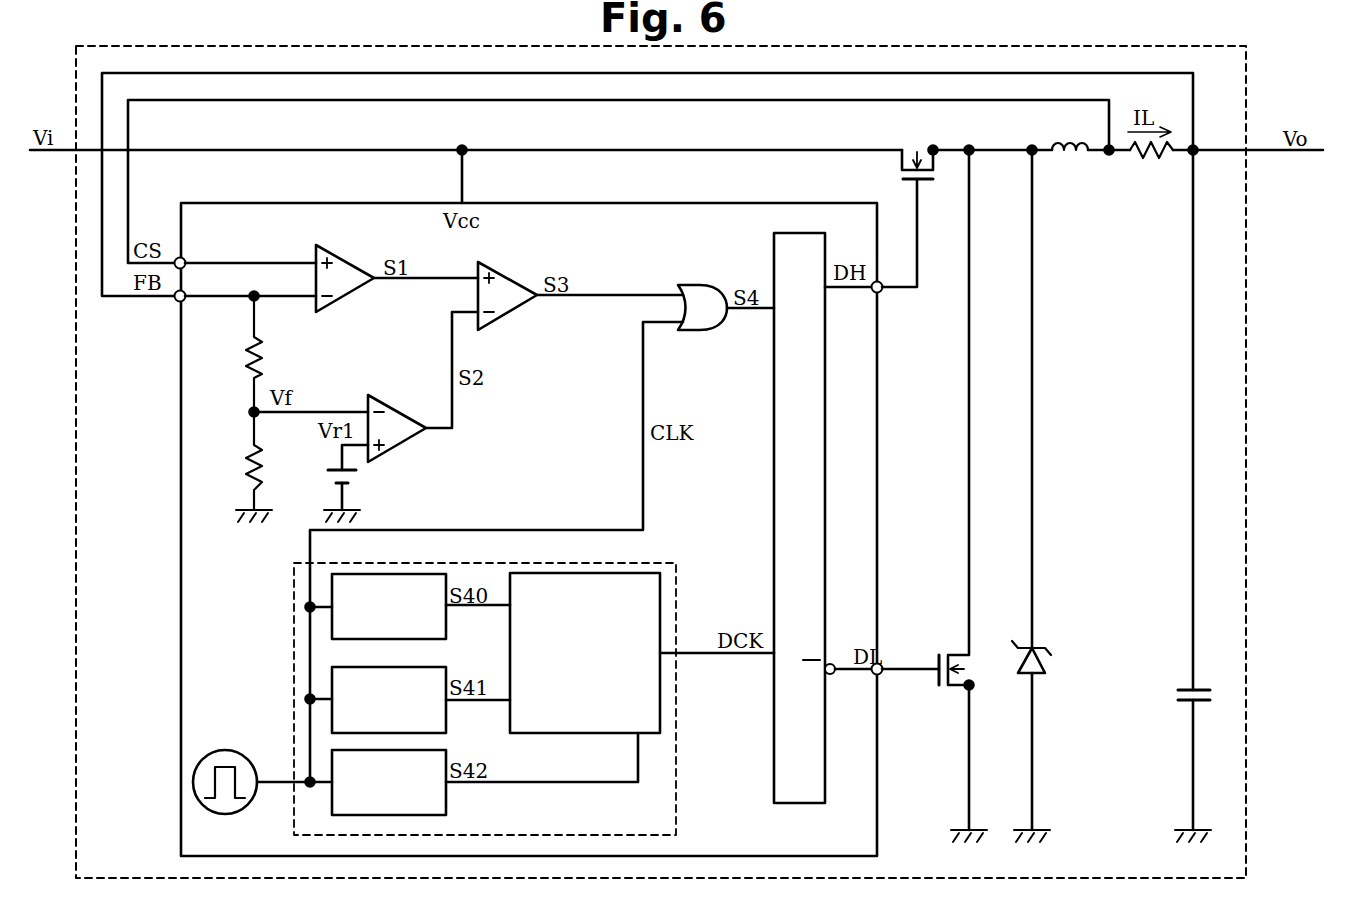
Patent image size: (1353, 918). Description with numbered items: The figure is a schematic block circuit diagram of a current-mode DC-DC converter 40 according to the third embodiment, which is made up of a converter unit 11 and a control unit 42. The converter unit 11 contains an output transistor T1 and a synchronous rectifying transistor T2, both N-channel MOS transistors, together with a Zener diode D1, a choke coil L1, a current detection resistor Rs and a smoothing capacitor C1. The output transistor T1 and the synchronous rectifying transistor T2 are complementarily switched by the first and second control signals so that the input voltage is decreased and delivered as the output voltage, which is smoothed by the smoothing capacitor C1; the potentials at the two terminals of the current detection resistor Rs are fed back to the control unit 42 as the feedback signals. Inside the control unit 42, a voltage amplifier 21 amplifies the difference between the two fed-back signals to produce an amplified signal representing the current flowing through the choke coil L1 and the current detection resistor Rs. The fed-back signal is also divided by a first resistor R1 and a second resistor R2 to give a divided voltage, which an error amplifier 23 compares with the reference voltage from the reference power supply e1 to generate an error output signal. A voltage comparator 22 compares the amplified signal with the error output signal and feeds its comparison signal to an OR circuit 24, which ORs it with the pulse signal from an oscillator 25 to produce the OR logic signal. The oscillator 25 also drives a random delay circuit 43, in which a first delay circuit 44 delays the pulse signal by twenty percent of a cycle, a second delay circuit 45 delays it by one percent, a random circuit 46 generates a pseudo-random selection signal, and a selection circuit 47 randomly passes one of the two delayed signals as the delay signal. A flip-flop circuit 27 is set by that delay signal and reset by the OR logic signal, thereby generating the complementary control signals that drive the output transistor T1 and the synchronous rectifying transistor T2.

The converter unit 11 is at (881, 139).
The voltage amplifier 21 is at (350, 240).
The voltage comparator 22 is at (500, 268).
The error amplifier 23 is at (405, 388).
The OR circuit 24 is at (686, 285).
The oscillator 25 is at (224, 750).
The flip-flop circuit 27 is at (774, 465).
The DC-DC converter 40 is at (1246, 60).
The control unit 42 is at (805, 203).
The random delay circuit 43 is at (653, 563).
The first delay circuit 44 is at (380, 574).
The second delay circuit 45 is at (420, 667).
The random circuit 46 is at (430, 750).
The selection circuit 47 is at (660, 590).
The output transistor T1 is at (906, 152).
The synchronous rectifying transistor T2 is at (960, 655).
The Zener diode D1 is at (1040, 648).
The smoothing capacitor C1 is at (1185, 690).
The choke coil L1 is at (1066, 160).
The current detection resistor Rs is at (1140, 160).
The first resistor R1 is at (262, 357).
The second resistor R2 is at (262, 463).
The reference power supply e1 is at (350, 476).